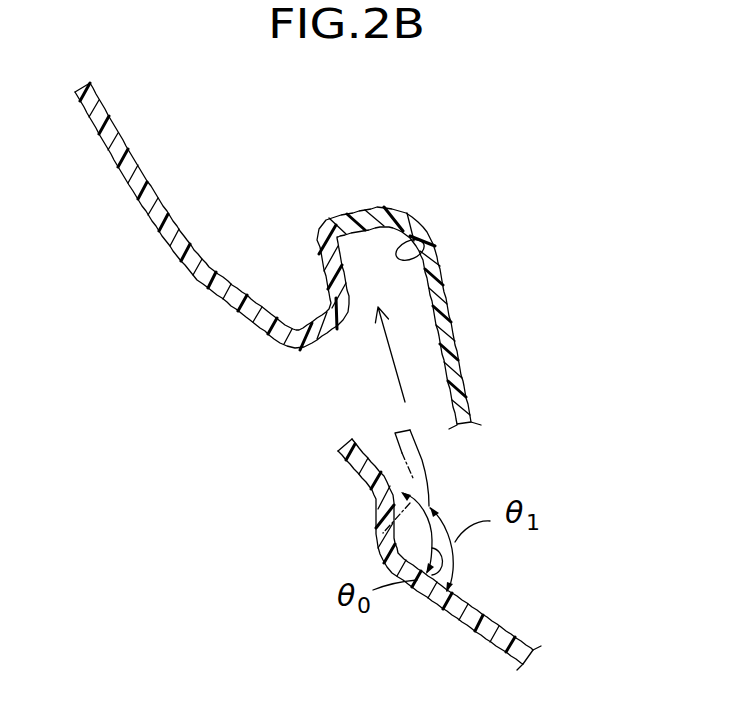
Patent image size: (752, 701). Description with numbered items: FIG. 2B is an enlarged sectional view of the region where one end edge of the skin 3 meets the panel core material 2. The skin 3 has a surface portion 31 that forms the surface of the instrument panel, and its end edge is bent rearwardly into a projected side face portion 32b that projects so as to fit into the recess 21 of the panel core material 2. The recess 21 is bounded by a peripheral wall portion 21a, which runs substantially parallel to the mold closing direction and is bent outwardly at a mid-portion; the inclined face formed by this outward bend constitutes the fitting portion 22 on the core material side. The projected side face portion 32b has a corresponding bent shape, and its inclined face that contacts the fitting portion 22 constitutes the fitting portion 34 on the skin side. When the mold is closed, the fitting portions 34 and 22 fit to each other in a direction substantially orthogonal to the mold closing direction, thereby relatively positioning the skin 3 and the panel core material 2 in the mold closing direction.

The panel core material 2 is at (146, 233).
The recess 21 is at (424, 252).
The peripheral wall portion 21a is at (326, 283).
The fitting portion 22 is at (313, 356).
The skin 3 is at (509, 637).
The surface portion 31 is at (485, 640).
The projected side face portion 32b is at (362, 474).
The fitting portion 34 is at (378, 514).